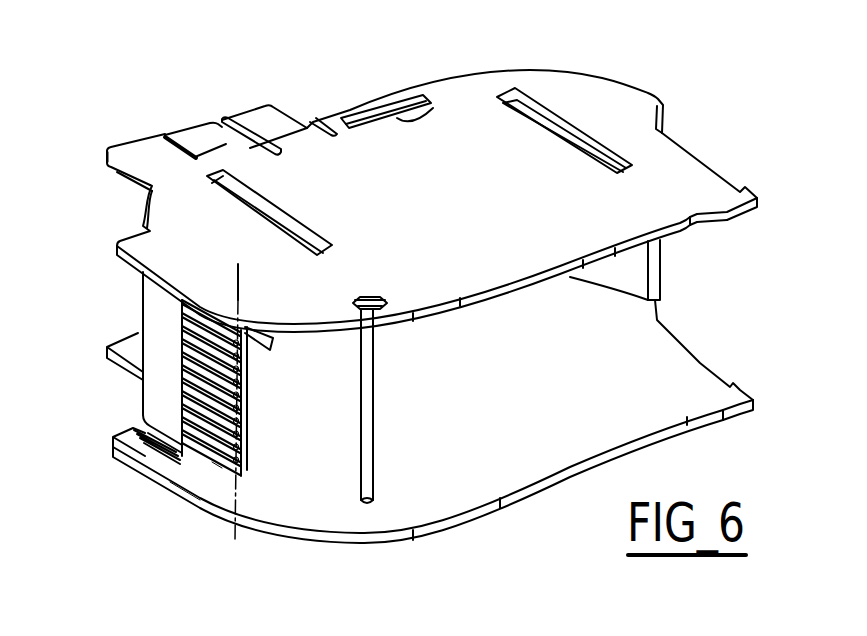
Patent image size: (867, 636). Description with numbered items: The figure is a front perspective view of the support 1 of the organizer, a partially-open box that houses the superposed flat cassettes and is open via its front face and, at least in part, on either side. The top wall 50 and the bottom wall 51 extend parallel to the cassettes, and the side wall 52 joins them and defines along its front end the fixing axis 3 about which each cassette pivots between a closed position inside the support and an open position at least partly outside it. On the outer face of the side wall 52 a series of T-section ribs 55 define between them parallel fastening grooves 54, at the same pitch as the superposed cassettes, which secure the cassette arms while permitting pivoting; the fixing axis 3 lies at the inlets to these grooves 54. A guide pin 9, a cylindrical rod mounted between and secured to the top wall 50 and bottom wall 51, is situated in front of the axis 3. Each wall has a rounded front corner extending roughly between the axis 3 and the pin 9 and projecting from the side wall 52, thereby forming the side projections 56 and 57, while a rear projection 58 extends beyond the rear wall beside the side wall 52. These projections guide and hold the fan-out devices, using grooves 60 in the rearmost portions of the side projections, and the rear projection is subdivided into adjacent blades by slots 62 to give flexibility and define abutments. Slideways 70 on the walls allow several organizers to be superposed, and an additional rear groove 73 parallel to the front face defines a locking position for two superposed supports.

The support 1 is at (676, 136).
The fixing axis 3 is at (240, 284).
The guide pin 9 is at (370, 452).
The top wall 50 is at (675, 196).
The bottom wall 51 is at (683, 388).
The side wall 52 is at (157, 372).
The fastening means 54 is at (217, 464).
The T-section ribs 55 is at (228, 350).
The side projection 56 is at (133, 259).
The side projection 57 is at (180, 474).
The rear projection 58 is at (115, 165).
The grooves 60 is at (134, 450).
The slots 62 is at (228, 120).
The slideways 70 is at (547, 116).
The additional rear groove 73 is at (437, 110).